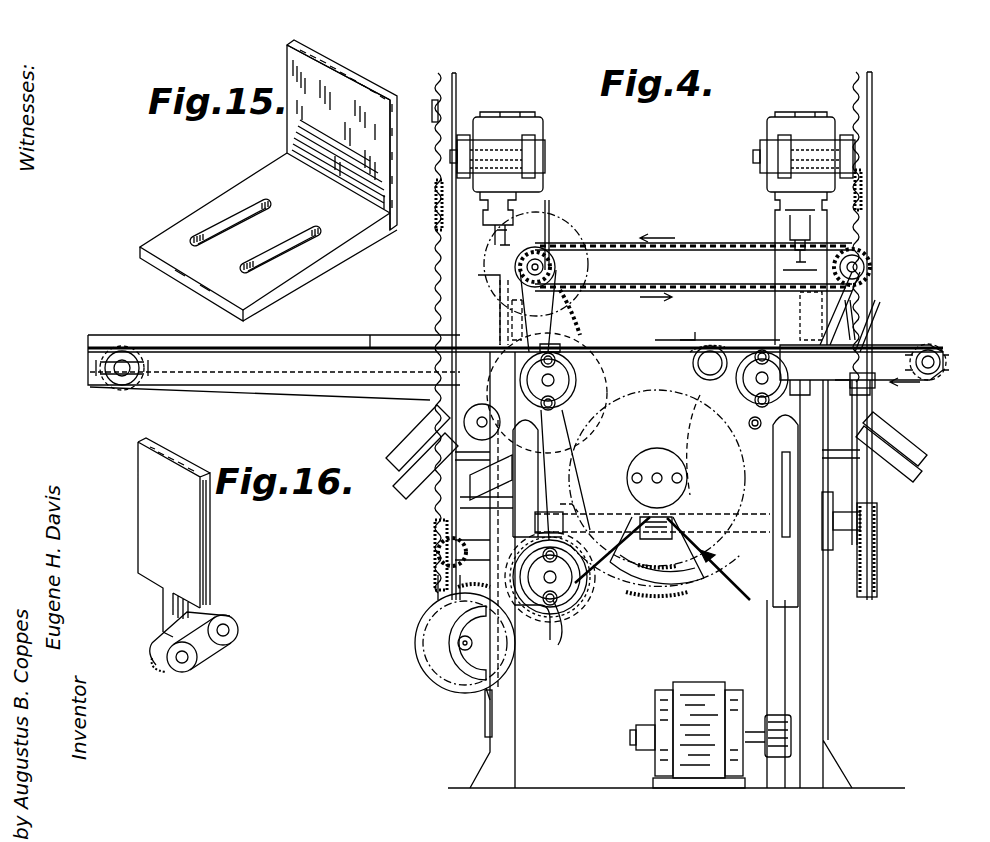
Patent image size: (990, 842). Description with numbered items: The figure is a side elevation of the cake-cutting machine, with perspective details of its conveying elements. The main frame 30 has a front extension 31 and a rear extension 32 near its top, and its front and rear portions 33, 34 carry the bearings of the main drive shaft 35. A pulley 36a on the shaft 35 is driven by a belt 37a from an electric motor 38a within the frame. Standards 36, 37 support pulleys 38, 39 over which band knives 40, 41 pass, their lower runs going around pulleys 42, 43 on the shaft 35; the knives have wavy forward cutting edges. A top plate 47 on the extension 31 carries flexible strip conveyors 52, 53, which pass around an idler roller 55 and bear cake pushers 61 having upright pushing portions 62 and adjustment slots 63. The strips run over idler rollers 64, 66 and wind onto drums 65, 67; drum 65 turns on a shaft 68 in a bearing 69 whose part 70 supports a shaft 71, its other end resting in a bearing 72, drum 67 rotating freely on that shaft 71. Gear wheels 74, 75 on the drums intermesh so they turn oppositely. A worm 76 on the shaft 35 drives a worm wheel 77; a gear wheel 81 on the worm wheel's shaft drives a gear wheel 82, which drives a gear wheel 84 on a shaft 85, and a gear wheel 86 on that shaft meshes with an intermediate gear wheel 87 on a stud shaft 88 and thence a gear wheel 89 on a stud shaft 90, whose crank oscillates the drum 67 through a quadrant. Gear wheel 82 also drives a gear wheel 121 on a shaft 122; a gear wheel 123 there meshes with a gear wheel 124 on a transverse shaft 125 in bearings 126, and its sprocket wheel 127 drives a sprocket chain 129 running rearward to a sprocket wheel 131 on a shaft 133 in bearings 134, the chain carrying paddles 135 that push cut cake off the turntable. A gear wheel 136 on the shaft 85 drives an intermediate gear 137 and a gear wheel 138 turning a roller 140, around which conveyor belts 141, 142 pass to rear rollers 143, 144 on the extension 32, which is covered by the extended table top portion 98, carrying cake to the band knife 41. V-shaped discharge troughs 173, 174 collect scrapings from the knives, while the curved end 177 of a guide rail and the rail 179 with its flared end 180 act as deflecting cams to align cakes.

In FIG. 4, the main frame 30 is at (838, 636).
In FIG. 4, the front extension 31 is at (305, 392).
In FIG. 4, the rear extension 32 is at (905, 350).
In FIG. 4, the front portion of main frame 33 is at (472, 506).
In FIG. 4, the rear portion of main frame 34 is at (815, 547).
In FIG. 4, the main drive shaft 35 is at (740, 512).
In FIG. 4, the standard 36 is at (545, 196).
In FIG. 4, the pulley 36a is at (831, 500).
In FIG. 4, the standard 37 is at (770, 198).
In FIG. 4, the belt 37a is at (775, 640).
In FIG. 4, the pulley 38 is at (438, 91).
In FIG. 4, the electric motor 38a is at (700, 685).
In FIG. 4, the pulley 39 is at (856, 86).
In FIG. 4, the band knife 40 is at (456, 91).
In FIG. 4, the band knife 41 is at (870, 298).
In FIG. 4, the pulley 42 is at (440, 548).
In FIG. 4, the pulley 43 is at (863, 497).
In FIG. 4, the top plate 47 is at (275, 352).
In FIG. 4, the strip conveyor 52 is at (200, 352).
In FIG. 4, the strip conveyor 53 is at (505, 492).
In FIG. 4, the idler roller 55 is at (115, 385).
In FIG. 15, the cake pusher 61 is at (268, 237).
In FIG. 4, the cake pusher 61 is at (565, 350).
In FIG. 15, the upright pushing portion 62 is at (320, 78).
In FIG. 15, the slot 63 is at (288, 249).
In FIG. 4, the idler roller 64 is at (505, 445).
In FIG. 4, the drum 65 is at (420, 636).
In FIG. 4, the idler roller 66 is at (520, 386).
In FIG. 4, the drum 67 is at (535, 640).
In FIG. 4, the shaft 68 is at (462, 648).
In FIG. 4, the bearing 69 is at (483, 662).
In FIG. 4, the bearing part 70 is at (484, 712).
In FIG. 4, the shaft 71 is at (560, 585).
In FIG. 4, the bearing 72 is at (590, 610).
In FIG. 4, the gear wheel 74 is at (420, 656).
In FIG. 4, the gear wheel 75 is at (565, 632).
In FIG. 4, the worm 76 is at (570, 504).
In FIG. 4, the worm wheel 77 is at (580, 530).
In FIG. 4, the gear wheel 81 is at (560, 640).
In FIG. 4, the gear wheel 82 is at (672, 597).
In FIG. 4, the gear wheel 84 is at (788, 420).
In FIG. 4, the shaft 85 is at (775, 392).
In FIG. 4, the gear wheel 86 is at (785, 383).
In FIG. 4, the intermediate gear wheel 87 is at (700, 478).
In FIG. 4, the stud shaft 88 is at (748, 430).
In FIG. 4, the gear wheel 89 is at (662, 566).
In FIG. 4, the stud shaft 90 is at (668, 474).
In FIG. 4, the table top portion 98 is at (595, 344).
In FIG. 4, the gear wheel 121 is at (570, 392).
In FIG. 4, the shaft 122 is at (560, 380).
In FIG. 4, the gear wheel 123 is at (567, 328).
In FIG. 4, the gear wheel 124 is at (580, 228).
In FIG. 4, the shaft 125 is at (560, 275).
In FIG. 4, the bearing 126 is at (500, 292).
In FIG. 4, the sprocket wheel 127 is at (560, 262).
In FIG. 16, the sprocket chain 129 is at (208, 648).
In FIG. 4, the sprocket chain 129 is at (695, 243).
In FIG. 4, the sprocket wheel 131 is at (870, 268).
In FIG. 4, the shaft 133 is at (872, 282).
In FIG. 4, the bearing 134 is at (815, 320).
In FIG. 16, the conveying paddle 135 is at (193, 530).
In FIG. 4, the conveying paddle 135 is at (552, 208).
In FIG. 4, the gear wheel 136 is at (740, 345).
In FIG. 4, the intermediate gear 137 is at (720, 412).
In FIG. 4, the gear wheel 138 is at (700, 378).
In FIG. 4, the roller 140 is at (700, 396).
In FIG. 4, the conveyor belt 141 is at (924, 392).
In FIG. 4, the conveyor belt 142 is at (922, 388).
In FIG. 4, the roller 143 is at (948, 366).
In FIG. 4, the roller 144 is at (943, 358).
In FIG. 4, the discharge trough 173 is at (392, 486).
In FIG. 4, the discharge trough 174 is at (410, 445).
In FIG. 4, the curved end 177 is at (372, 340).
In FIG. 4, the rail 179 is at (698, 345).
In FIG. 4, the flared curved end 180 is at (658, 340).